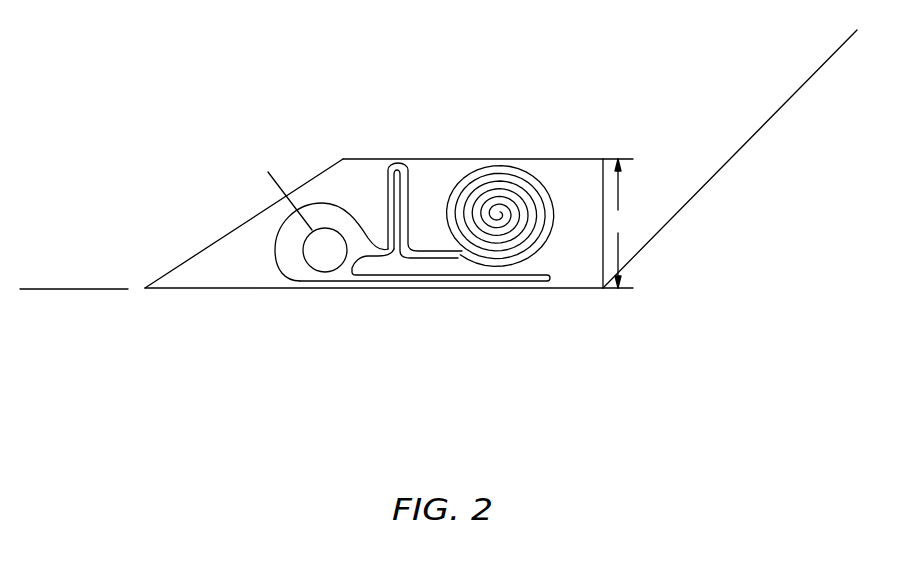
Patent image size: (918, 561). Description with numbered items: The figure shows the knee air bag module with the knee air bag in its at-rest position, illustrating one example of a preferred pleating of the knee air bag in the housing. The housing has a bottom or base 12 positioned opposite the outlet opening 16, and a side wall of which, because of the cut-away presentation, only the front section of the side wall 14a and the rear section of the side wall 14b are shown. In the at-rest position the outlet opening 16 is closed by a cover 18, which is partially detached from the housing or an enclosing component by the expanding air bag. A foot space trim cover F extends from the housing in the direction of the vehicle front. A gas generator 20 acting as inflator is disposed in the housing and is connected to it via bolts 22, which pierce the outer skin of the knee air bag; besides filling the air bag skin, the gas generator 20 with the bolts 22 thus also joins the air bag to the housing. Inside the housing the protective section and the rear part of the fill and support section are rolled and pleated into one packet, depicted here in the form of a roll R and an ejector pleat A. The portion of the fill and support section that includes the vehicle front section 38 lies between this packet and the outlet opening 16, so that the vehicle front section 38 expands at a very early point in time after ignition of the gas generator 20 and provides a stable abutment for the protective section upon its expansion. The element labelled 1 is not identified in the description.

The substrate surface 1 is at (782, 112).
The bottom or base 12 is at (503, 160).
The front section of the side wall 14a is at (208, 247).
The rear section of the side wall 14b is at (603, 208).
The outlet opening 16 is at (250, 278).
The cover 18 is at (565, 290).
The gas generator 20 is at (325, 260).
The bolts 22 is at (268, 176).
The vehicle front section 38 is at (512, 281).
The ejector pleat A is at (403, 168).
The roll R is at (543, 170).
The foot space trim cover F is at (83, 289).